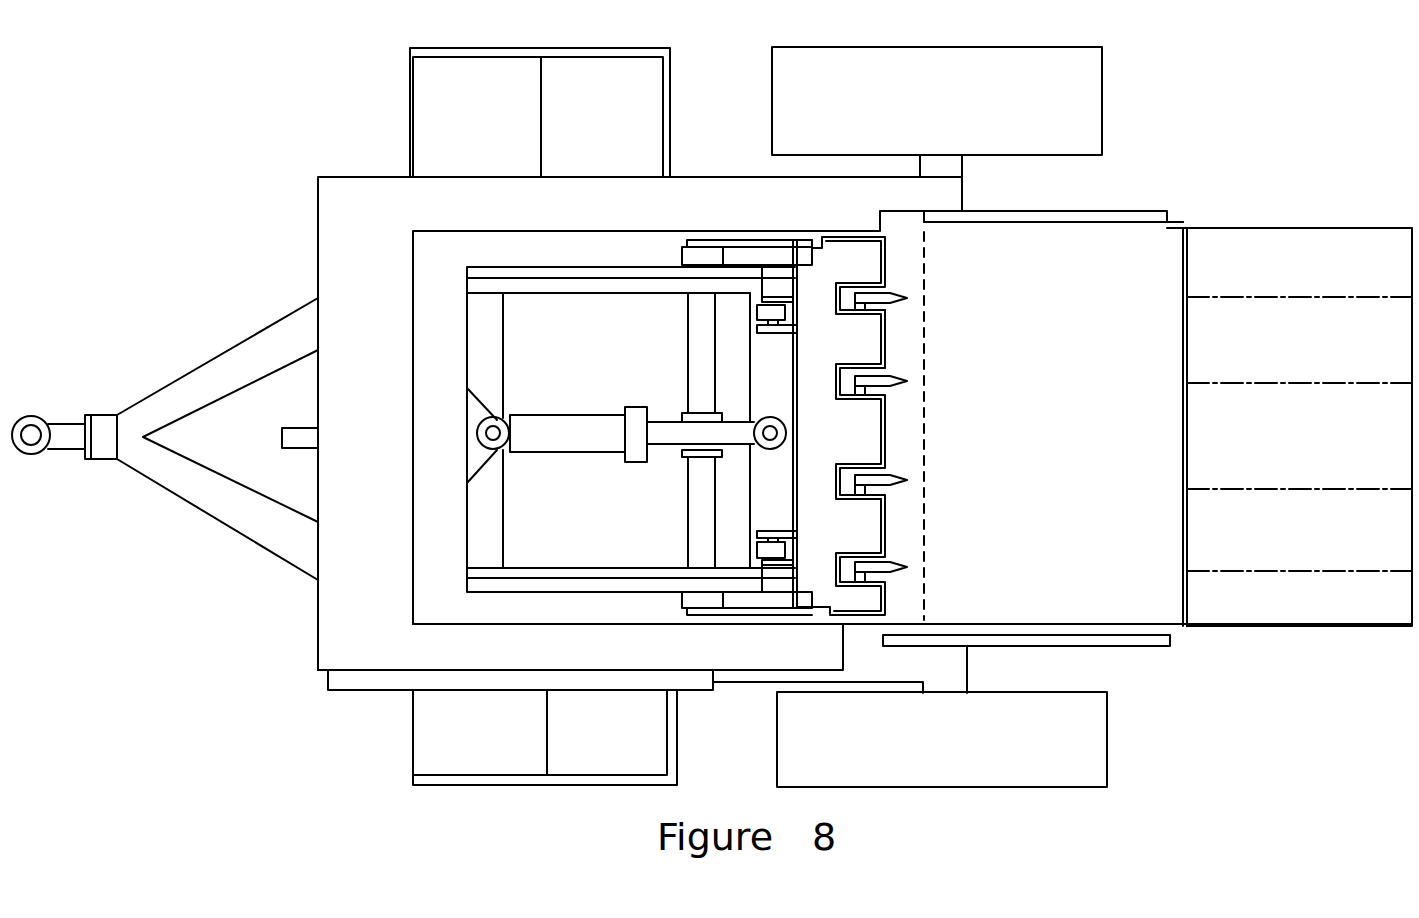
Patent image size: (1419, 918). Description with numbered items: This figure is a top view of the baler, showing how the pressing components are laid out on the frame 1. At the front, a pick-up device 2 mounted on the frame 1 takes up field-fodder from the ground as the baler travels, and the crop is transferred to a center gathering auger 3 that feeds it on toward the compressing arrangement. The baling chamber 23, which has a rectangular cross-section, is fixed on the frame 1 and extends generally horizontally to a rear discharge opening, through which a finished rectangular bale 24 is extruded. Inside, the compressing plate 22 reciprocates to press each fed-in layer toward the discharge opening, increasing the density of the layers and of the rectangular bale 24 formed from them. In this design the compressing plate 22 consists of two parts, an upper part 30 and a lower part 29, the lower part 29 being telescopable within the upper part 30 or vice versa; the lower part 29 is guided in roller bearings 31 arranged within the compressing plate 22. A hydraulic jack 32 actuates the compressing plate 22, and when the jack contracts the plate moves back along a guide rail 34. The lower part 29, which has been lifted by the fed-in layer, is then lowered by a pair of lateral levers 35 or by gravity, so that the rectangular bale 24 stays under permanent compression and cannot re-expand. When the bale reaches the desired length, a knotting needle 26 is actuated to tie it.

The frame 1 is at (346, 276).
The pick-up device 2 is at (447, 75).
The center gathering auger 3 is at (580, 75).
The compressing plate 22 is at (765, 290).
The baling chamber 23 is at (1135, 258).
The rectangular bale 24 is at (1285, 555).
The knotting needle 26 is at (882, 473).
The lower part 29 is at (870, 353).
The upper part 30 is at (886, 334).
The roller bearings 31 is at (757, 312).
The hydraulic jack 32 is at (550, 452).
The guide rail 34 is at (567, 278).
The lateral levers 35 is at (735, 238).